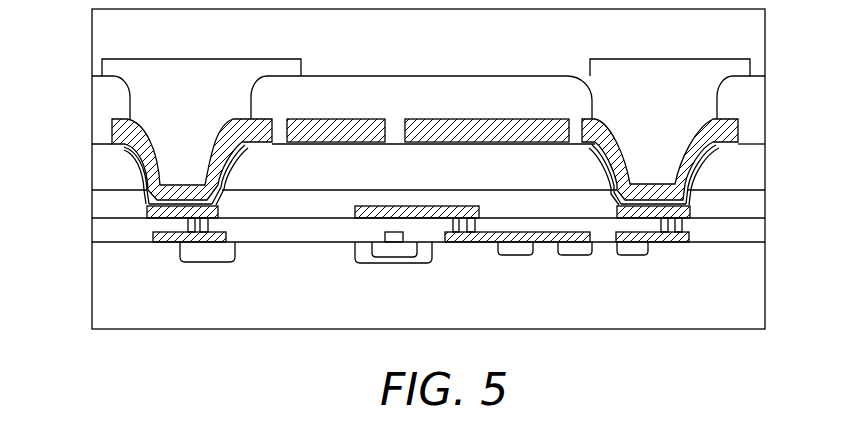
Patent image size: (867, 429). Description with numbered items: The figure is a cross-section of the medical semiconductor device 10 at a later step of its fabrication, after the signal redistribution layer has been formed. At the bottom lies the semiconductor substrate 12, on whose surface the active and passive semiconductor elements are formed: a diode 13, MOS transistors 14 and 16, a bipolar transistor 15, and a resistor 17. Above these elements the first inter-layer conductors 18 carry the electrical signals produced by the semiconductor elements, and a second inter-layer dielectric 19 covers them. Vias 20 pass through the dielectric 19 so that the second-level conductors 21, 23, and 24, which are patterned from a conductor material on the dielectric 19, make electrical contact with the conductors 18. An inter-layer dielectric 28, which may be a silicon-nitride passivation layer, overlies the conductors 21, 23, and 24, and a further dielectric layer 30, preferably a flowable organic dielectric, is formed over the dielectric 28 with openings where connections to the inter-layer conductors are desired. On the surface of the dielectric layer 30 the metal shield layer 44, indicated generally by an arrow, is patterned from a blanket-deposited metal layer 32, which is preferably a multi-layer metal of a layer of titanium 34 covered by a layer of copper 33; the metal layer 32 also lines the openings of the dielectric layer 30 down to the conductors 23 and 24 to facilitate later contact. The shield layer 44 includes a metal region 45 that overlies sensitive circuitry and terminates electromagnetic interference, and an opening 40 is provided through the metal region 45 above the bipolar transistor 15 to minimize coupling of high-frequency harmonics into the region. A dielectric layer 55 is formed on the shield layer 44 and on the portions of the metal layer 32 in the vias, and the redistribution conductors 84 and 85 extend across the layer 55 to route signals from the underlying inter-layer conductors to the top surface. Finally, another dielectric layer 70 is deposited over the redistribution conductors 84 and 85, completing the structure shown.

The device 10 is at (601, 374).
The semiconductor substrate 12 is at (363, 307).
The diode 13 is at (182, 260).
The MOS transistor 14 is at (520, 257).
The bipolar transistor 15 is at (393, 263).
The MOS transistor 16 is at (578, 257).
The resistor 17 is at (632, 257).
The conductors 18 is at (162, 238).
The second inter-layer dielectric 19 is at (100, 233).
The vias 20 is at (213, 225).
The conductor 21 is at (363, 212).
The conductor 23 is at (218, 212).
The conductor 24 is at (692, 210).
The inter-layer dielectric 28 is at (331, 214).
The dielectric layer 30 is at (393, 180).
The metal layer 32 is at (103, 142).
The layer of copper 33 is at (720, 120).
The layer of titanium 34 is at (743, 140).
The opening 40 is at (392, 112).
The metal shield layer 44 is at (489, 97).
The metal region 45 is at (525, 120).
The dielectric layer 55 is at (340, 112).
The dielectric layer 70 is at (428, 42).
The conductor 84 is at (201, 110).
The conductor 85 is at (668, 94).